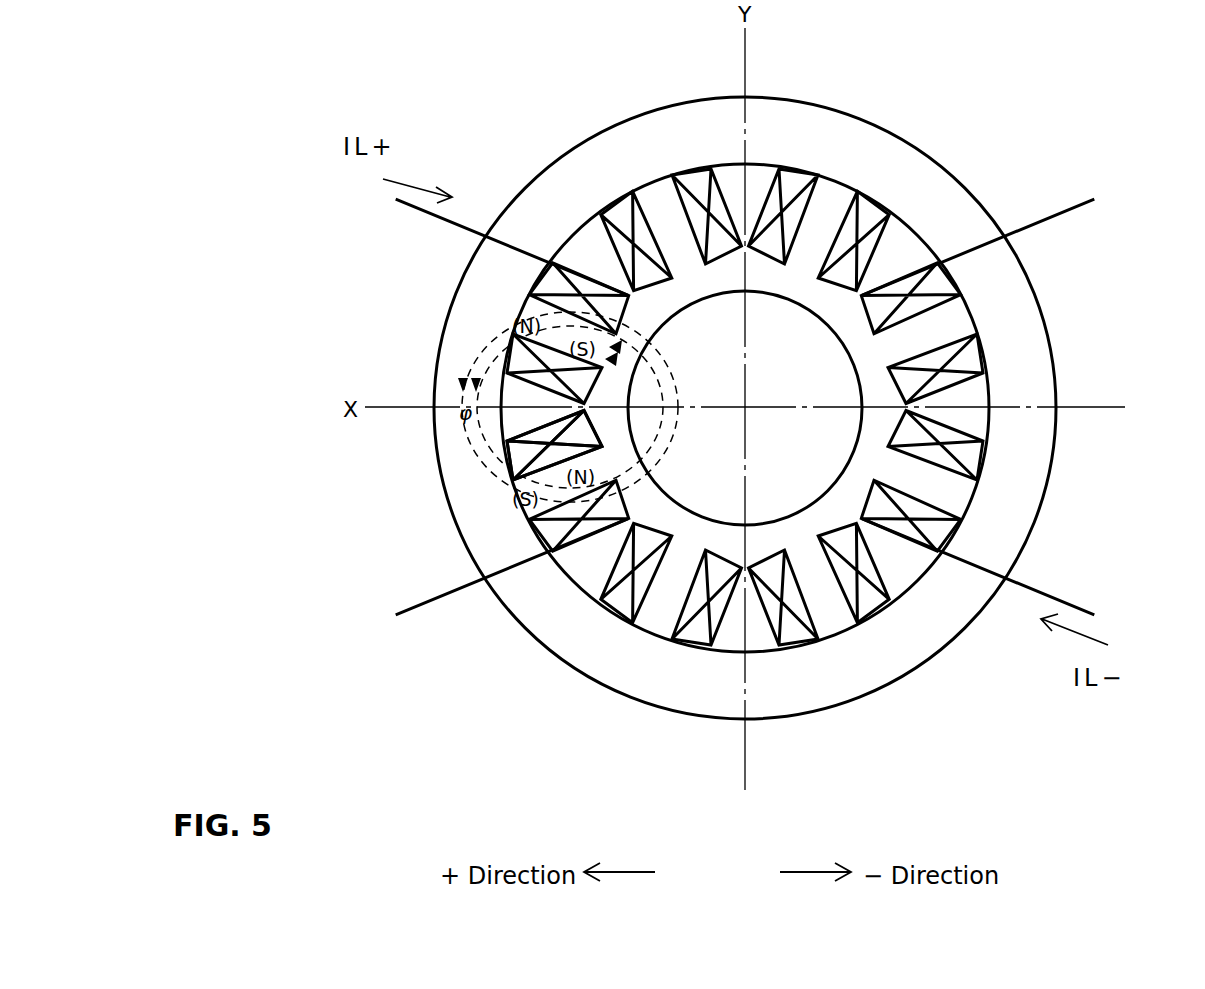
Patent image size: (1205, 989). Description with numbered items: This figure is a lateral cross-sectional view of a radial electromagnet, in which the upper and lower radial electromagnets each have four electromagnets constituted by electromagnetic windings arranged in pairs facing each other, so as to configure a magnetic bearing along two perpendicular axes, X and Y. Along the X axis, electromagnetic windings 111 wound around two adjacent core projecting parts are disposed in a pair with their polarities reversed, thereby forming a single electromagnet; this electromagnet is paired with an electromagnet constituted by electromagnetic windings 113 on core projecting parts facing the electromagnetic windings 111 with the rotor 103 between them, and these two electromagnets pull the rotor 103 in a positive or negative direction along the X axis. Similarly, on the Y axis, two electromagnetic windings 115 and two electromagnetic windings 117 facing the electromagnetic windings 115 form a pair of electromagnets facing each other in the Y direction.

The rotor 103 is at (838, 365).
The electromagnetic windings 111 is at (548, 290).
The electromagnetic windings 113 is at (938, 355).
The electromagnetic windings 115 is at (690, 213).
The electromagnetic windings 117 is at (645, 582).